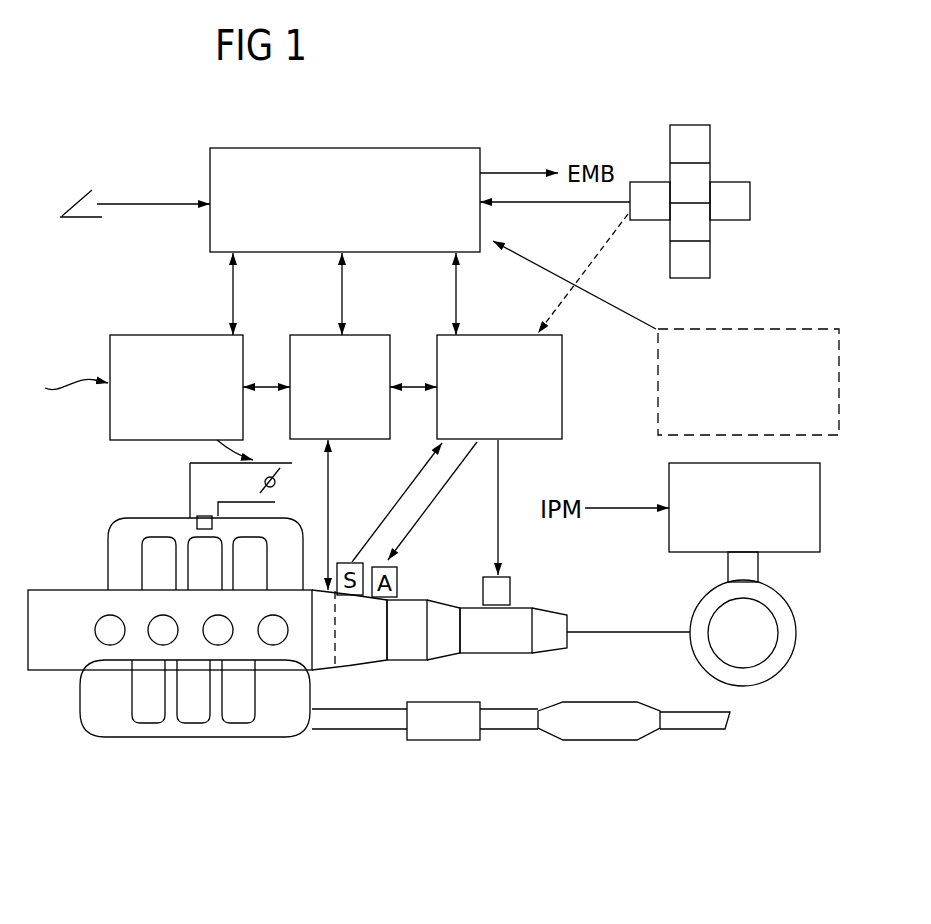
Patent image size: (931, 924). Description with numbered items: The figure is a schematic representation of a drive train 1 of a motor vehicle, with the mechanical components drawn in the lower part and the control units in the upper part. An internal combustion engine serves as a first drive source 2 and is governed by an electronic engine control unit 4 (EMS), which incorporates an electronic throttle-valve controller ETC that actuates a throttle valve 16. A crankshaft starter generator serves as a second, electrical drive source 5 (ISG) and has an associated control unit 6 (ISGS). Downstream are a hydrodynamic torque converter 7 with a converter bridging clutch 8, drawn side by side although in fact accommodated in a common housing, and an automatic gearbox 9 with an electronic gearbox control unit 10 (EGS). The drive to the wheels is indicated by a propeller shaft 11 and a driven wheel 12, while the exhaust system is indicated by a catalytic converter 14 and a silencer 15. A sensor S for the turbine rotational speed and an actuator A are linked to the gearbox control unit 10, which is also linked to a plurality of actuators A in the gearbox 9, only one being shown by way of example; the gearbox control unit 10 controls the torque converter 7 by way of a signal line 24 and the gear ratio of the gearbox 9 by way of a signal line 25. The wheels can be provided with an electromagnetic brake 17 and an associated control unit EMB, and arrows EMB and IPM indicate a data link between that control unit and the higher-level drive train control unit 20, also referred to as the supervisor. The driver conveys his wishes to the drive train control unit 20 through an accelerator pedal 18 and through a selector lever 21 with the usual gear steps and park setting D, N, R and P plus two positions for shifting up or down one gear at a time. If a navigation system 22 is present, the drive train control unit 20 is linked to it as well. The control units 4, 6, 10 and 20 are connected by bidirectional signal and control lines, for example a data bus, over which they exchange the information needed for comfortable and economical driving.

The drive train 1 is at (69, 388).
The first drive source 2 is at (52, 590).
The electronic engine control unit 4 is at (155, 335).
The second, electrical drive source 5 is at (322, 660).
The control unit 6 is at (368, 335).
The hydrodynamic torque converter 7 is at (415, 602).
The converter bridging clutch 8 is at (368, 658).
The automatic gearbox 9 is at (520, 607).
The electronic gearbox control unit 10 is at (488, 335).
The propeller shaft 11 is at (612, 628).
The driven wheel 12 is at (797, 632).
The catalytic converter 14 is at (444, 732).
The silencer 15 is at (598, 732).
The throttle valve 16 is at (275, 490).
The electromagnetic brake 17 is at (821, 499).
The accelerator pedal 18 is at (72, 193).
The drive train control unit 20 is at (346, 148).
The selector lever 21 is at (712, 170).
The navigation system 22 is at (772, 329).
The signal line 24 is at (439, 492).
The signal line 25 is at (500, 462).